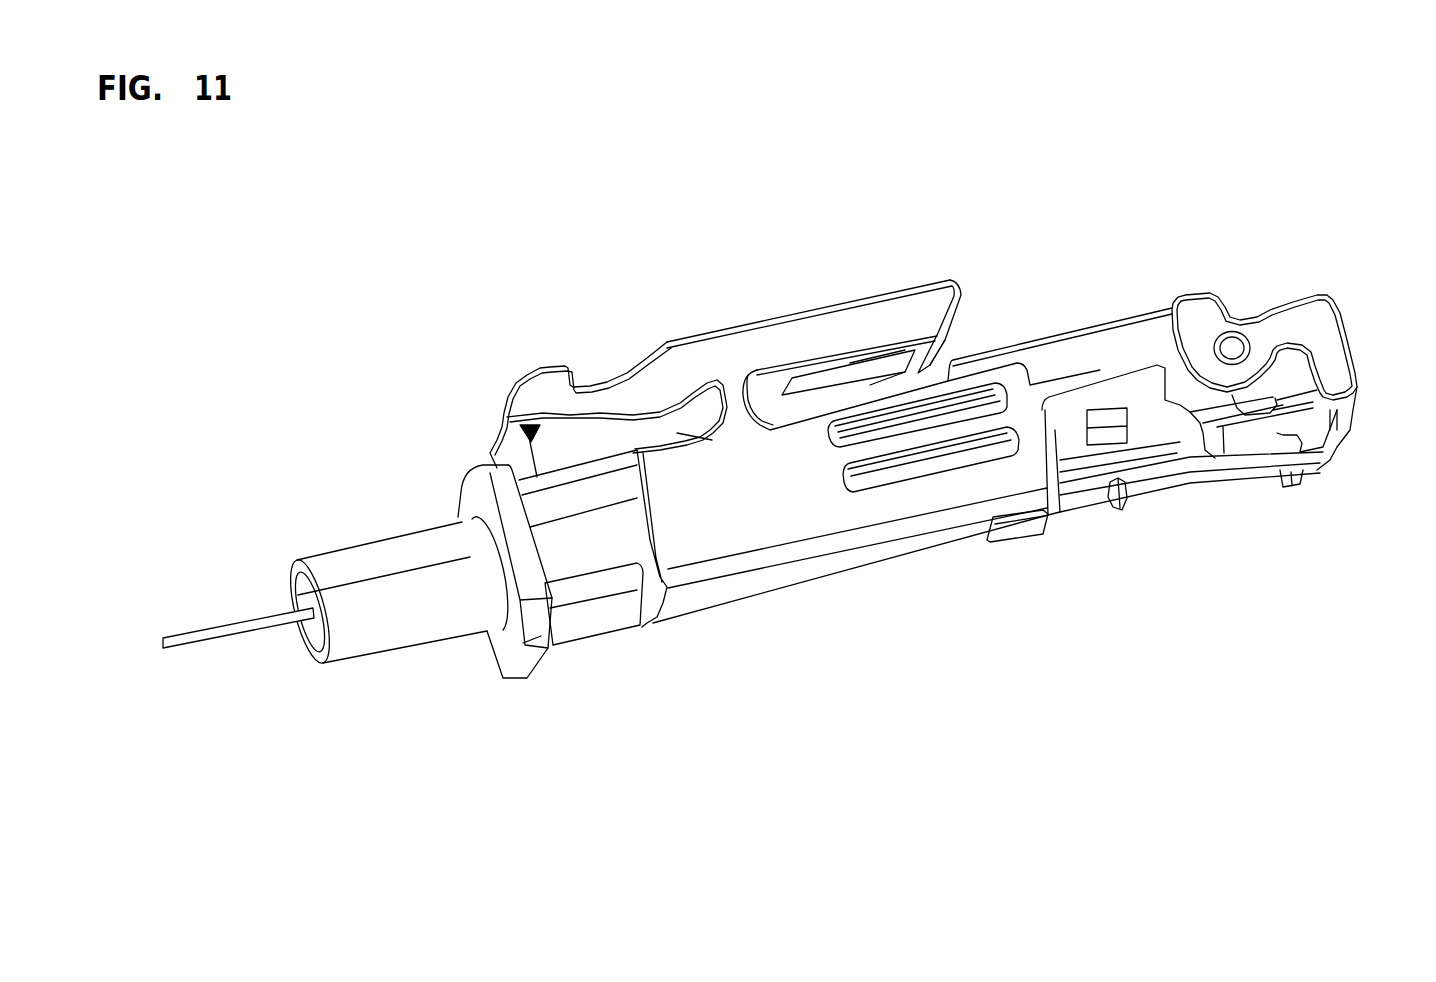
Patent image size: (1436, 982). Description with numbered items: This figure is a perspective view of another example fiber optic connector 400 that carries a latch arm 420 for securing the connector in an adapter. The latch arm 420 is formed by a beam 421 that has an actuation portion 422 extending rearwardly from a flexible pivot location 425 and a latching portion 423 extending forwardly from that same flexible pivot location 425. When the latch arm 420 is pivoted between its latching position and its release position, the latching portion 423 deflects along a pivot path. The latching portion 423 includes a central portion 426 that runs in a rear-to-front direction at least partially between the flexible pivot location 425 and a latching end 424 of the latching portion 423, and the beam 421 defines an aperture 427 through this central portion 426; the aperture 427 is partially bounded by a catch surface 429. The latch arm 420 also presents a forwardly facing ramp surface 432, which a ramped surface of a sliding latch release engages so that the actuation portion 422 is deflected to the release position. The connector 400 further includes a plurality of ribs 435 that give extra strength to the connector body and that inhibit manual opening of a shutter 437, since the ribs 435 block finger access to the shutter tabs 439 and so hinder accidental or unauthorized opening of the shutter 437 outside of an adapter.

The fiber optic connector 400 is at (879, 596).
The latch arm 420 is at (758, 295).
The beam 421 is at (875, 293).
The actuation portion 422 is at (600, 356).
The latching portion 423 is at (903, 259).
The latching end 424 is at (953, 280).
The flexible pivot location 425 is at (733, 398).
The central portion 426 is at (838, 303).
The aperture 427 is at (805, 382).
The catch surface 429 is at (901, 353).
The forwardly facing ramp surface 432 is at (945, 340).
The ribs 435 is at (1123, 323).
The shutter 437 is at (1343, 337).
The shutter tabs 439 is at (1203, 293).